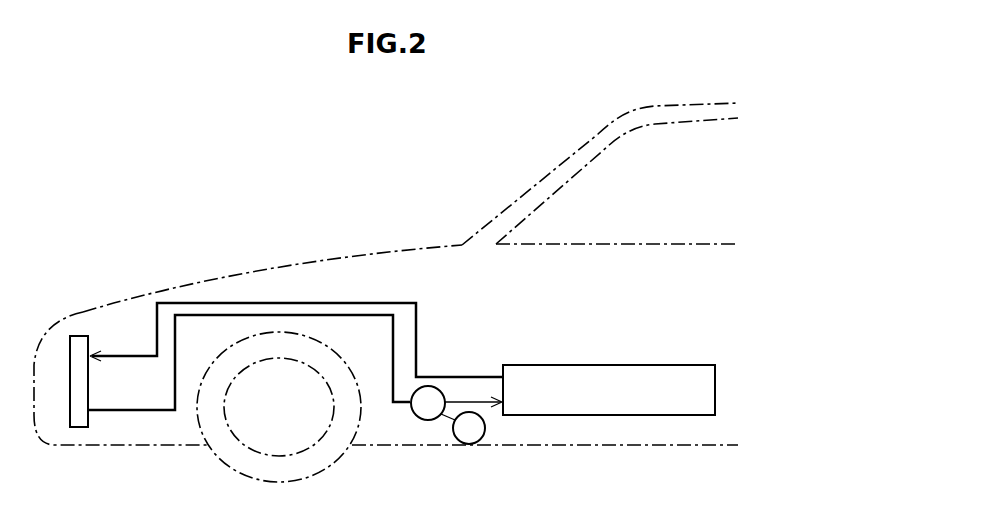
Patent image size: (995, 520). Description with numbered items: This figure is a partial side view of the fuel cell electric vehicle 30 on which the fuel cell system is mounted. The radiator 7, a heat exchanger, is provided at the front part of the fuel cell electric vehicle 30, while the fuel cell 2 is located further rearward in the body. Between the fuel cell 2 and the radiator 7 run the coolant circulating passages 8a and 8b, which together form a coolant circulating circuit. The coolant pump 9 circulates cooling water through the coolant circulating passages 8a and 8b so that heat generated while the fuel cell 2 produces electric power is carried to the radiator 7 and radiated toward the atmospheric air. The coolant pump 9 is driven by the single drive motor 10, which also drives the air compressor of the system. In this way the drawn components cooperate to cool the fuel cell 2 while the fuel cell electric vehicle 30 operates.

The fuel cell 2 is at (610, 415).
The radiator 7 is at (78, 427).
The coolant circulating passage 8a is at (130, 410).
The coolant circulating passage 8b is at (123, 356).
The coolant pump 9 is at (418, 415).
The drive motor 10 is at (455, 438).
The fuel cell electric vehicle 30 is at (396, 246).